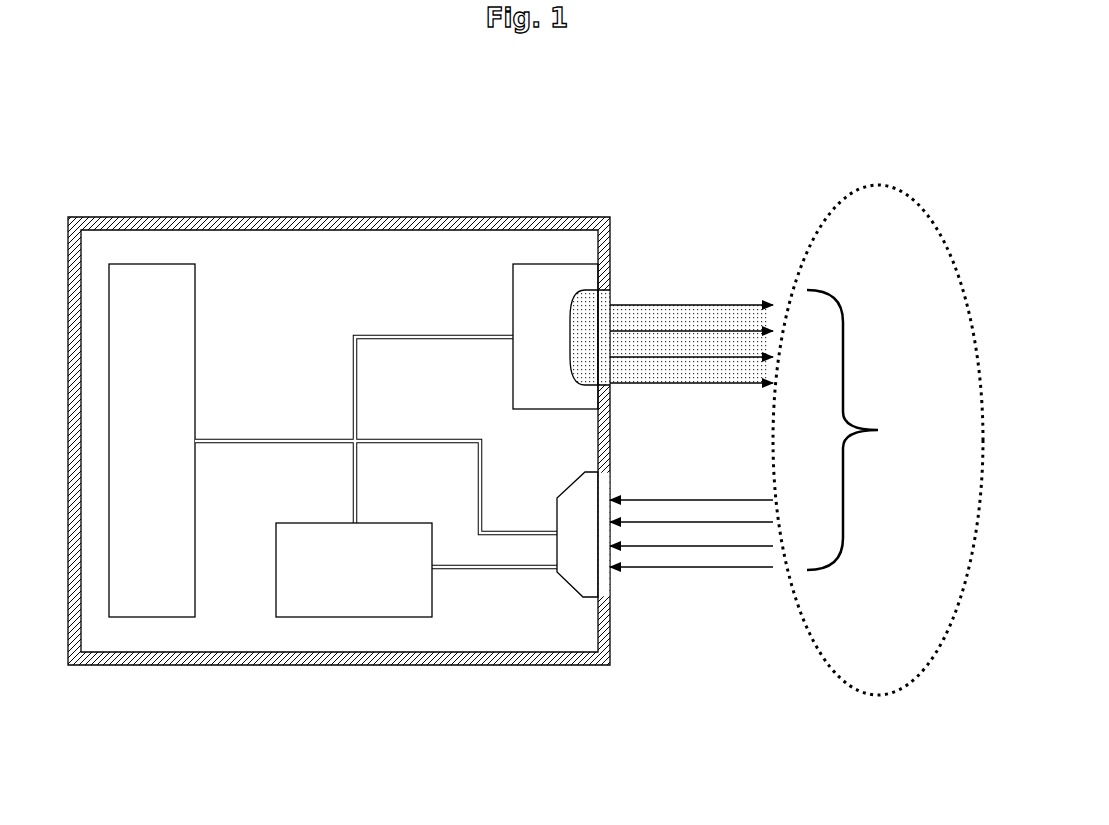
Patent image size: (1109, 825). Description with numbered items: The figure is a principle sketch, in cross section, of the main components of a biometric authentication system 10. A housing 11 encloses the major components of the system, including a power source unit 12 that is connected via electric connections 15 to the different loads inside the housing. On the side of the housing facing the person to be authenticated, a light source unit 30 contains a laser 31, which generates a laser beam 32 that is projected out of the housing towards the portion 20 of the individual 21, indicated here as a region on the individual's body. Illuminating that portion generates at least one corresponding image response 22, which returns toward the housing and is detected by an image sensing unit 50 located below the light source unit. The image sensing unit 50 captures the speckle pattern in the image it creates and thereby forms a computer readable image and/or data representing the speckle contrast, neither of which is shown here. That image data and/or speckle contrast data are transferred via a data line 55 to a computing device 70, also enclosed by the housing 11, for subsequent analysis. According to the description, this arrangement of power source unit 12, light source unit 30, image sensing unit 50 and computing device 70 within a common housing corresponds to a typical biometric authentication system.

The biometric authentication system 10 is at (420, 420).
The housing 11 is at (235, 217).
The power source unit 12 is at (150, 264).
The electric connections 15 is at (353, 485).
The portion of the individual 20 is at (867, 430).
The individual 21 is at (878, 185).
The image response 22 is at (728, 546).
The light source unit 30 is at (537, 264).
The laser 31 is at (600, 303).
The laser beam 32 is at (692, 322).
The image sensing unit 50 is at (573, 588).
The data line 55 is at (494, 567).
The computing device 70 is at (318, 617).